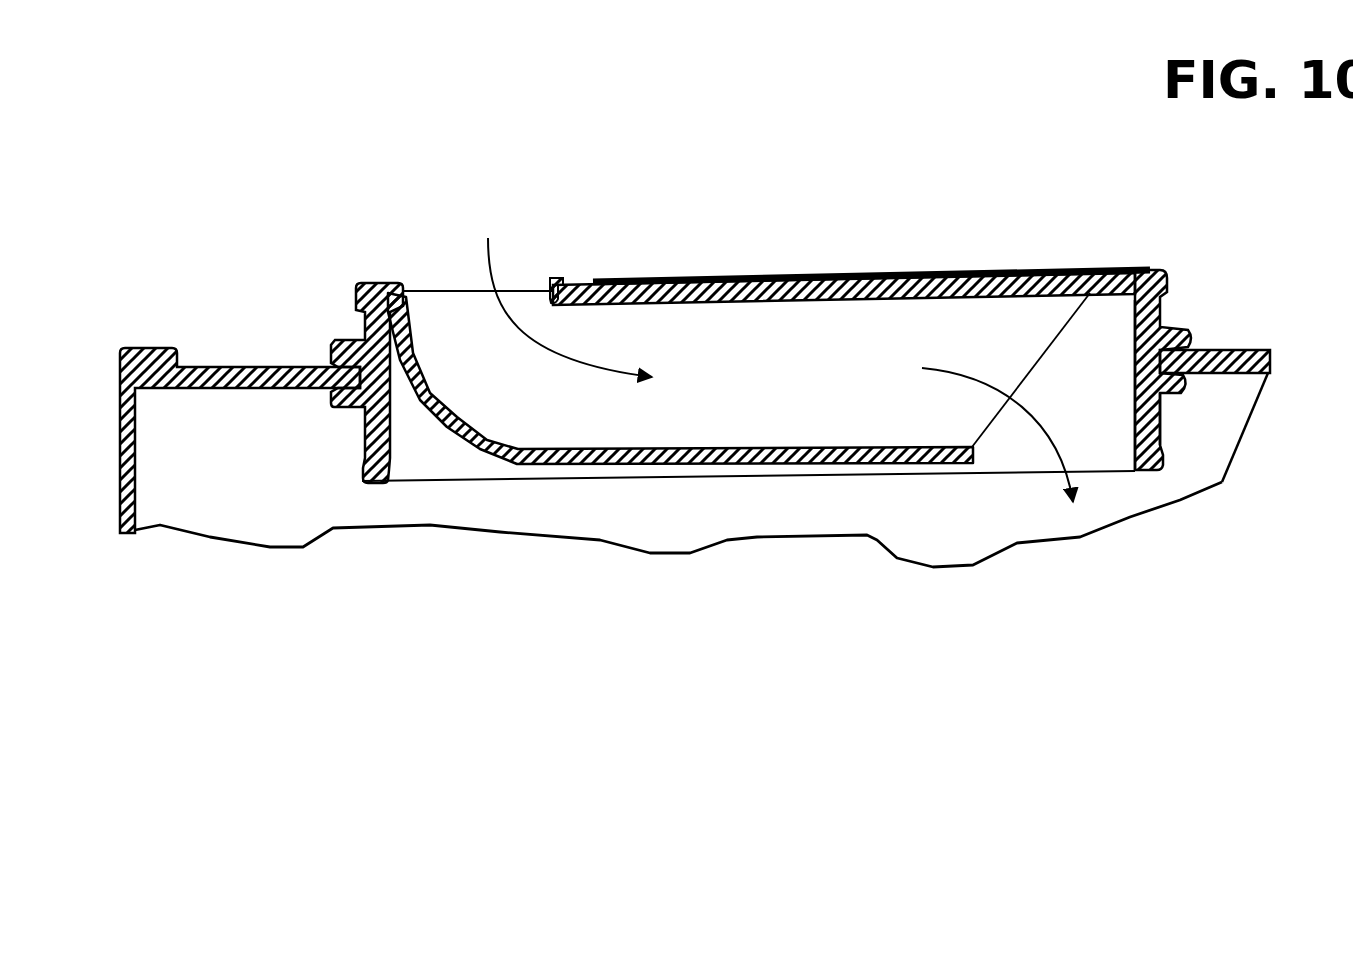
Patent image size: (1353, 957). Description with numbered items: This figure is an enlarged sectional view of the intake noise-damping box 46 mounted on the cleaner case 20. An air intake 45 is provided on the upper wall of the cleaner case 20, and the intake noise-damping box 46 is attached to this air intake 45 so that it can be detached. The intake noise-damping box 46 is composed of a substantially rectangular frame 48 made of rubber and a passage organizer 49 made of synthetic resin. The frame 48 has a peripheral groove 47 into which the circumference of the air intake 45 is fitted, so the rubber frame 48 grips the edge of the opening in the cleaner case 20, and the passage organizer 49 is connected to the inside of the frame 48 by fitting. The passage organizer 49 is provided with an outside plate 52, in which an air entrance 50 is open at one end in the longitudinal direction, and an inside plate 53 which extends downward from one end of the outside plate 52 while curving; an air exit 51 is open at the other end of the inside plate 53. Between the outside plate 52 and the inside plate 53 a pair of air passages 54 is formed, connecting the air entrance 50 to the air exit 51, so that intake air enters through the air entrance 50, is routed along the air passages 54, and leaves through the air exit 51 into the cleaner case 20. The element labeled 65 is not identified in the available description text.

The cleaner case 20 is at (1238, 353).
The air intake 45 is at (375, 428).
The intake noise-damping box 46 is at (918, 262).
The peripheral groove 47 is at (1155, 413).
The frame 48 is at (1168, 280).
The passage organizer 49 is at (742, 276).
The air entrance 50 is at (482, 307).
The air exit 51 is at (1018, 452).
The outside plate 52 is at (630, 293).
The inside plate 53 is at (627, 462).
The air passage 54 is at (811, 401).
The inner surface 65 is at (1038, 320).